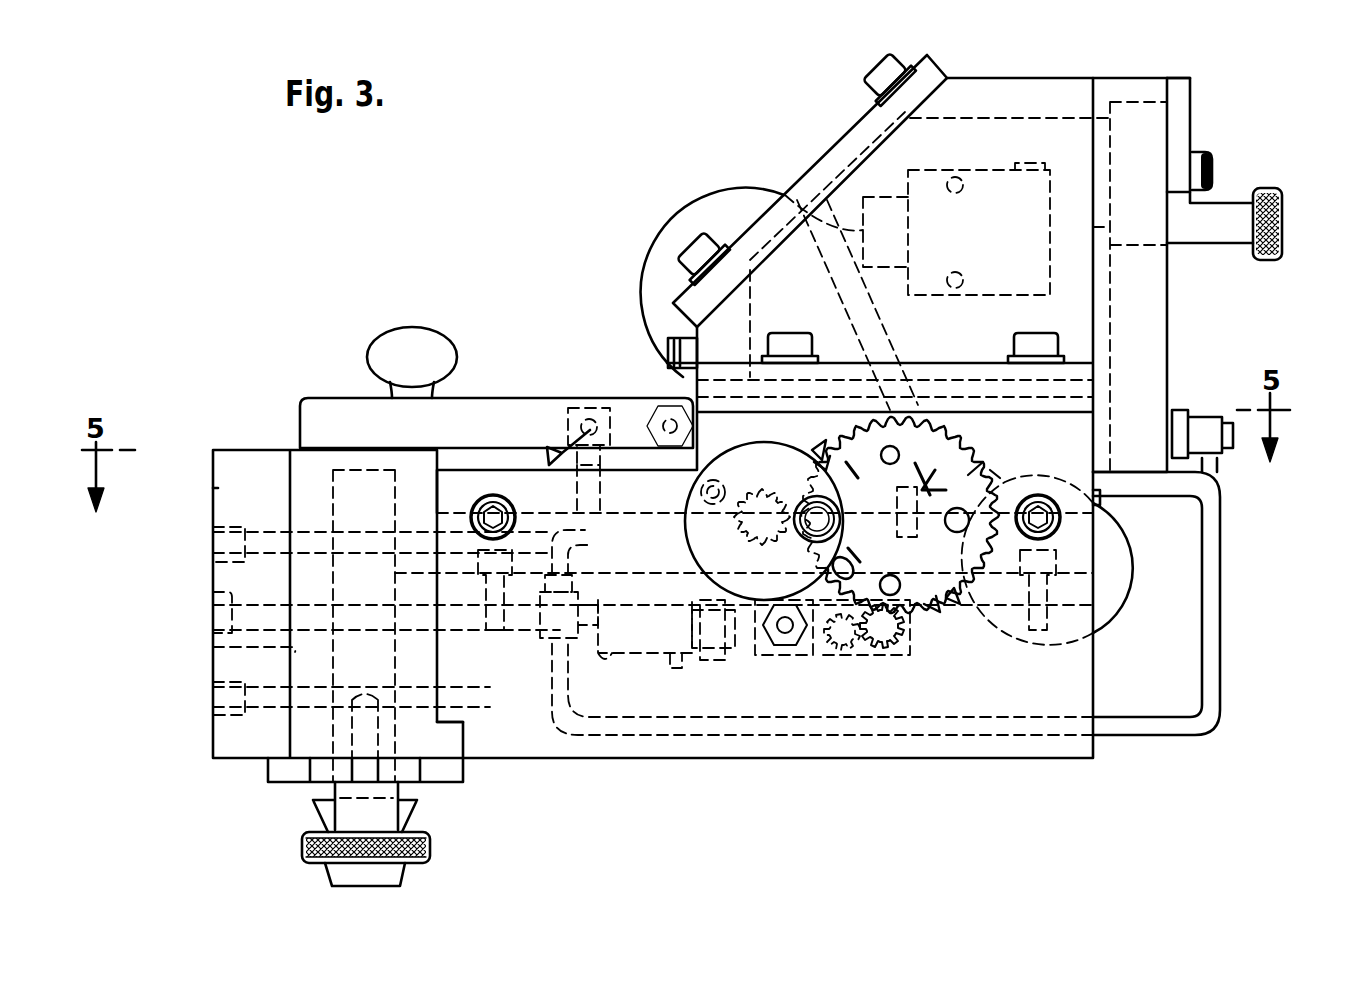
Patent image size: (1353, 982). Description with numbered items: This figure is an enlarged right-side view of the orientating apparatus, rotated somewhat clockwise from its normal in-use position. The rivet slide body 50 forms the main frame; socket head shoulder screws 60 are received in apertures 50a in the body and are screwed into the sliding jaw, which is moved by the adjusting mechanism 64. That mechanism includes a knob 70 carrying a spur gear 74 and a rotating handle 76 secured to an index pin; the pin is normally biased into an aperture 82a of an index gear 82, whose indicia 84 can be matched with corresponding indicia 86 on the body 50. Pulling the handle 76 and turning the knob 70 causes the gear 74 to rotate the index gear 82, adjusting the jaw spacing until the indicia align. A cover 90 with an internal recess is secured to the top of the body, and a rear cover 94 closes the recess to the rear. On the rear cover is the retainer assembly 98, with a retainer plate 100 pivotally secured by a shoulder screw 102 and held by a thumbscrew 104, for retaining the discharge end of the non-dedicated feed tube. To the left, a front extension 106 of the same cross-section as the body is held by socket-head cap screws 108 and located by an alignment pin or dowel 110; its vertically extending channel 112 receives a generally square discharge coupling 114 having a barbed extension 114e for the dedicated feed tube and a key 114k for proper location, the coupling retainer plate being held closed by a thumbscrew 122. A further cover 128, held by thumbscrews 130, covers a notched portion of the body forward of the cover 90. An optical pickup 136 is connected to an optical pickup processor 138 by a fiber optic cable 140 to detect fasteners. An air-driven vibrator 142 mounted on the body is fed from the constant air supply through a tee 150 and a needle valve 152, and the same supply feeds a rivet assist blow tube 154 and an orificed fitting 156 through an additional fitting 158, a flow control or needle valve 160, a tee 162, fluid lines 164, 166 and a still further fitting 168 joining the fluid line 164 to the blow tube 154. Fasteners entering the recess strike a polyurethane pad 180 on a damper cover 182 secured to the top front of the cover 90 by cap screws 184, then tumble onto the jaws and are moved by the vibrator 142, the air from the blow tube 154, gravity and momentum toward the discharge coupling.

The rivet slide body 50 is at (985, 758).
The apertures 50a is at (478, 505).
The socket head shoulder screws 60 is at (1052, 500).
The adjusting mechanism 64 is at (1012, 466).
The knob 70 is at (702, 582).
The spur gear 74 is at (752, 545).
The rotating handle 76 is at (840, 519).
The index gear 82 is at (922, 462).
The aperture 82a is at (895, 447).
The indicia 84 is at (948, 608).
The indicia 86 is at (975, 455).
The cover 90 is at (1062, 75).
The rear cover 94 is at (1170, 278).
The retainer assembly 98 is at (1255, 113).
The retainer plate 100 is at (1192, 92).
The shoulder screw 102 is at (1207, 152).
The thumbscrew 104 is at (1268, 188).
The front extension 106 is at (213, 495).
The socket-head cap screws 108 is at (213, 678).
The alignment pin or dowel 110 is at (213, 592).
The vertically extending channel 112 is at (213, 648).
The discharge coupling 114 is at (300, 462).
The barbed extension 114e is at (420, 815).
The key 114k is at (455, 742).
The thumbscrew 122 is at (430, 847).
The further cover 128 is at (515, 398).
The thumbscrews 130 is at (404, 342).
The optical pickup 136 is at (700, 505).
The optical pickup processor 138 is at (1012, 170).
The fiber optic cable 140 is at (640, 288).
The air-driven vibrator 142 is at (1130, 568).
The tee 150 is at (770, 658).
The needle valve 152 is at (875, 660).
The rivet assist blow tube 154 is at (1205, 508).
The orificed fitting 156 is at (582, 410).
The additional fitting 158 is at (715, 660).
The flow control or needle valve 160 is at (608, 665).
The tee 162 is at (535, 620).
The fluid line 164 is at (1138, 738).
The fluid line 166 is at (578, 540).
The fitting 168 is at (1208, 412).
The polyurethane pad 180 is at (850, 125).
The damper cover 182 is at (820, 175).
The cap screws 184 is at (685, 238).